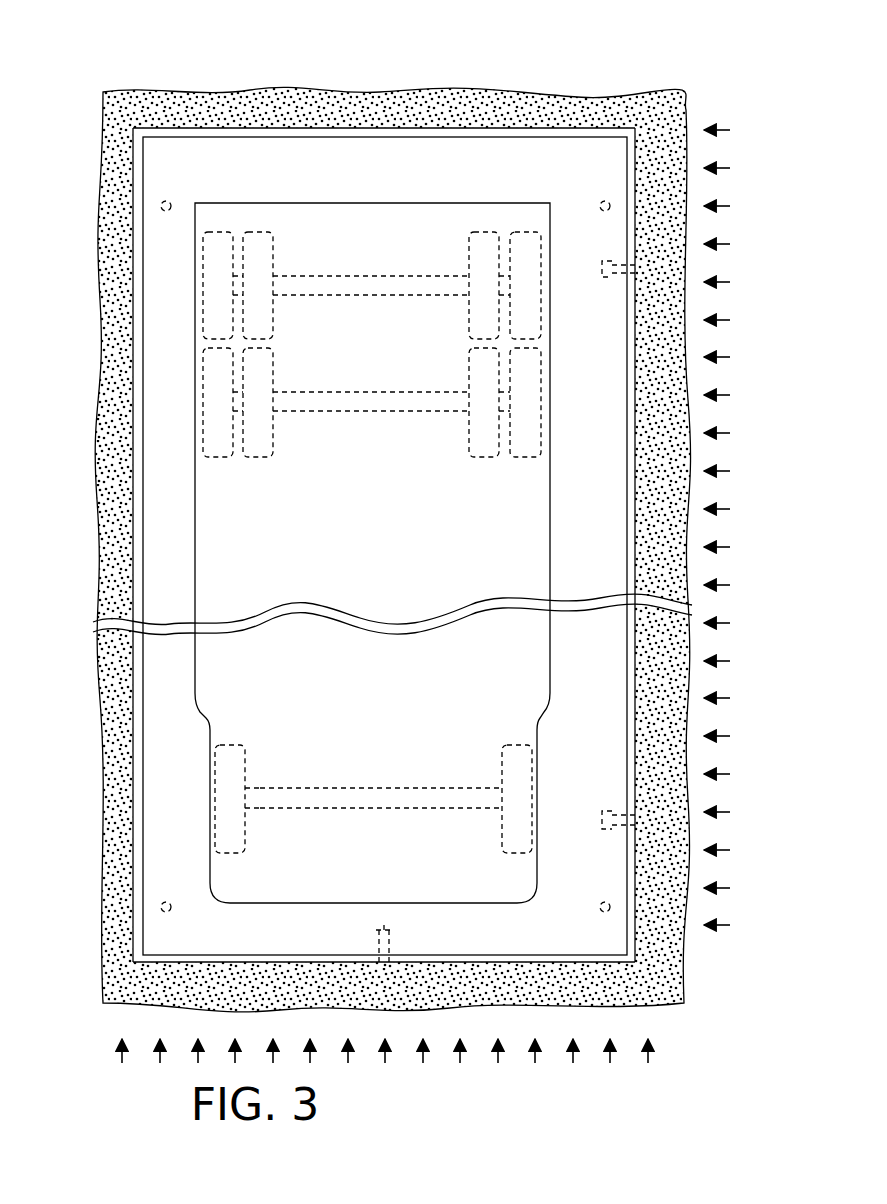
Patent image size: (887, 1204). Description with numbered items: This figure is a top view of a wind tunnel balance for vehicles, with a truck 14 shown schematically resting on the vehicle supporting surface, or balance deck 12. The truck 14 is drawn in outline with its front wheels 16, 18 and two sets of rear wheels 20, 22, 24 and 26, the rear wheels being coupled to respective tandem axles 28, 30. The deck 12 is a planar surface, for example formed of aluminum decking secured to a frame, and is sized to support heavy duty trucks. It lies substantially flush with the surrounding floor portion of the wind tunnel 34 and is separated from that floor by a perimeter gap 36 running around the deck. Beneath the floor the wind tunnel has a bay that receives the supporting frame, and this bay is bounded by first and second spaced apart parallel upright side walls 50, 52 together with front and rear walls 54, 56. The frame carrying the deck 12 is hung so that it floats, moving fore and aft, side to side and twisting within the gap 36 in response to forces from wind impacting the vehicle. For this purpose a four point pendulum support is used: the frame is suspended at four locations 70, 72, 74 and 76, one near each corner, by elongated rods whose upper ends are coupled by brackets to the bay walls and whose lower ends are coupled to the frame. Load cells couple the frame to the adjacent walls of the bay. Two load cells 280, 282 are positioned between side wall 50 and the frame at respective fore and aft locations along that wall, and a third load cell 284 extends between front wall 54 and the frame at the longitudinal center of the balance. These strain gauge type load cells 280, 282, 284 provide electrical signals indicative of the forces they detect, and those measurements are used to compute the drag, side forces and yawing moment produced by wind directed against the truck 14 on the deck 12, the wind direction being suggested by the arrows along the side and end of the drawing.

The vehicle supporting surface 12 is at (490, 150).
The truck 14 is at (530, 516).
The front wheel 16 is at (503, 750).
The front wheel 18 is at (244, 746).
The rear wheel 20 is at (255, 458).
The rear wheel 22 is at (484, 458).
The rear wheel 24 is at (273, 327).
The rear wheel 26 is at (468, 325).
The tandem axle 28 is at (362, 413).
The tandem axle 30 is at (373, 276).
The wind tunnel floor portion 34 is at (656, 380).
The perimeter gap 36 is at (633, 660).
The side wall 50 is at (615, 428).
The side wall 52 is at (143, 488).
The front wall 54 is at (277, 963).
The rear wall 56 is at (346, 130).
The suspension location 70 is at (600, 908).
The suspension location 72 is at (605, 200).
The suspension location 74 is at (175, 910).
The suspension location 76 is at (172, 200).
The load cell 280 is at (633, 815).
The load cell 282 is at (633, 280).
The load cell 284 is at (392, 960).